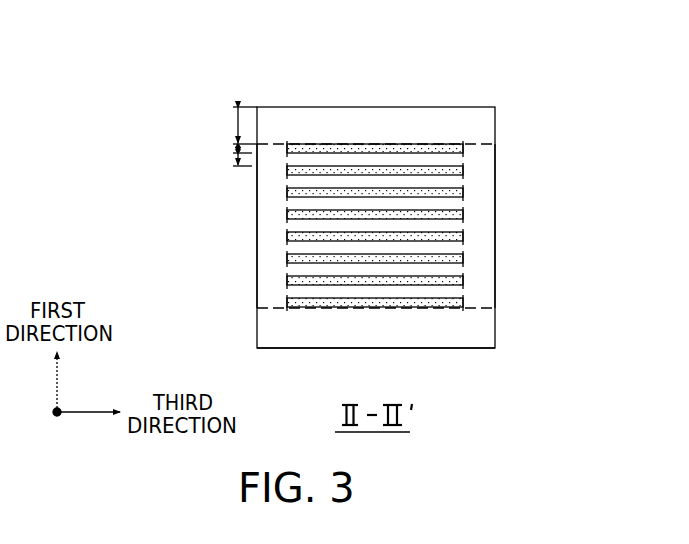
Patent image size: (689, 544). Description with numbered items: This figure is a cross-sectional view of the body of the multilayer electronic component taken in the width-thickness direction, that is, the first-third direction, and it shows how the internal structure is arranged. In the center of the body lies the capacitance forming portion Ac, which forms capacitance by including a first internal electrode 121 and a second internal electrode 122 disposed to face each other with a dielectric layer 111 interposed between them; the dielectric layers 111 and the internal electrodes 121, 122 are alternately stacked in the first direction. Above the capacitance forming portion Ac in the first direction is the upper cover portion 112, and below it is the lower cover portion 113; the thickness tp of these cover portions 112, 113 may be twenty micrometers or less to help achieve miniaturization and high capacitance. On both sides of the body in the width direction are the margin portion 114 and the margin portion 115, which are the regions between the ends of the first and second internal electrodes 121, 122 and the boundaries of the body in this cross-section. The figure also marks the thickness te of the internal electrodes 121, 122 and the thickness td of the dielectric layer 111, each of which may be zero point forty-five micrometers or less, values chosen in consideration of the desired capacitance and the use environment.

The upper cover portion 112 is at (381, 124).
The lower cover portion 113 is at (489, 327).
The margin portion 114 is at (270, 264).
The margin portion 115 is at (489, 252).
The dielectric layer 111 is at (420, 136).
The first internal electrode 121 is at (462, 146).
The second internal electrode 122 is at (463, 168).
The capacitance forming portion Ac is at (371, 212).
The thickness of the cover portions tp is at (236, 125).
The thickness of the internal electrodes te is at (232, 148).
The thickness of the dielectric layer td is at (232, 160).